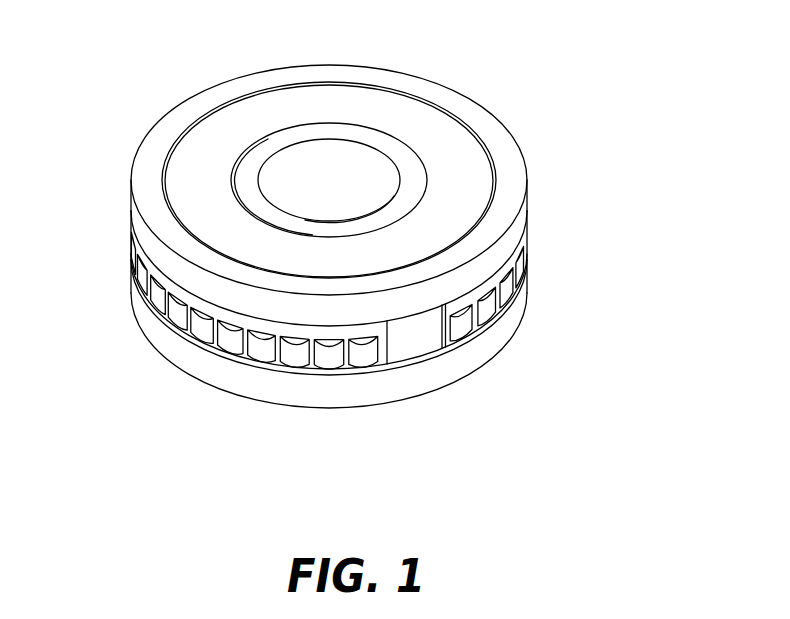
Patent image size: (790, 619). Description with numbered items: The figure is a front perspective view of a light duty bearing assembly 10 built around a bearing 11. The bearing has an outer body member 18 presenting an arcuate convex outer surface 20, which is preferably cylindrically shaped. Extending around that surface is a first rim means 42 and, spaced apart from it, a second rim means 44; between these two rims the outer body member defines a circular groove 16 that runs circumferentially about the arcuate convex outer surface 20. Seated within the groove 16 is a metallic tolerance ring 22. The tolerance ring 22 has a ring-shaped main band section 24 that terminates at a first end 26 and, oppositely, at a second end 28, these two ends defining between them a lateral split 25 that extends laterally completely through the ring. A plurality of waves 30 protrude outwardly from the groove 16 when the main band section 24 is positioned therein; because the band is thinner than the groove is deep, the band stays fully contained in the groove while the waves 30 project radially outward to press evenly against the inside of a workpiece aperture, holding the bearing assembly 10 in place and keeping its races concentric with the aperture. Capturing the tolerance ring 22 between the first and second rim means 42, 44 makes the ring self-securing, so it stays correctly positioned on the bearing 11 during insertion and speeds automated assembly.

The bearing assembly 10 is at (700, 262).
The bearing 11 is at (432, 128).
The groove 16 is at (416, 358).
The outer body member 18 is at (146, 329).
The arcuate convex outer surface 20 is at (524, 214).
The tolerance ring 22 is at (273, 367).
The main band section 24 is at (134, 241).
The lateral split 25 is at (437, 335).
The first end 26 is at (452, 345).
The second end 28 is at (367, 368).
The waves 30 is at (228, 352).
The first rim means 42 is at (157, 143).
The second rim means 44 is at (297, 400).